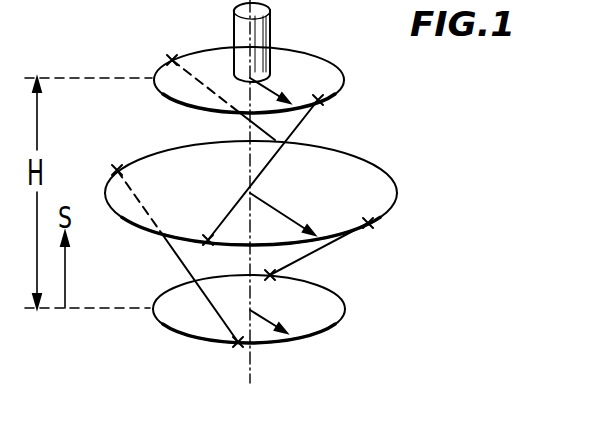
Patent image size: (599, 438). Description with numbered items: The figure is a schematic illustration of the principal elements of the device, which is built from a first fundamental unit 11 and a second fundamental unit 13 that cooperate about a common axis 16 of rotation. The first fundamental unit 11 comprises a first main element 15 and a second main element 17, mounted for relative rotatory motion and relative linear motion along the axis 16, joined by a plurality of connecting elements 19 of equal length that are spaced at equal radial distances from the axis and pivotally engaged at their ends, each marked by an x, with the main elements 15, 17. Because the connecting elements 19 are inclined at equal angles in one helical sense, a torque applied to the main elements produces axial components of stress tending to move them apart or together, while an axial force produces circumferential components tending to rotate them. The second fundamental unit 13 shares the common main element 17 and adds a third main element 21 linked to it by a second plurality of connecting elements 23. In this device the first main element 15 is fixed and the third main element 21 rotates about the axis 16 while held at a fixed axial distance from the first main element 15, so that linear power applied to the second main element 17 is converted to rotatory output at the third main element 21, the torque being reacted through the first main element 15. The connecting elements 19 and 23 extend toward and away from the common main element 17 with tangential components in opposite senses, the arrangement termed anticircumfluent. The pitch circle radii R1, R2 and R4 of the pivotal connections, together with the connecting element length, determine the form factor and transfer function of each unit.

The first fundamental unit 11 is at (388, 263).
The second fundamental unit 13 is at (157, 38).
The first main element 15 is at (343, 299).
The axis of rotation 16 is at (250, 369).
The second main element 17 is at (382, 166).
The connecting elements 19 is at (184, 265).
The third main element 21 is at (338, 66).
The second plurality of connecting elements 23 is at (245, 117).
The pitch circle radius R1 is at (268, 320).
The pitch circle radius R2 is at (315, 196).
The pitch circle radius R4 is at (341, 80).